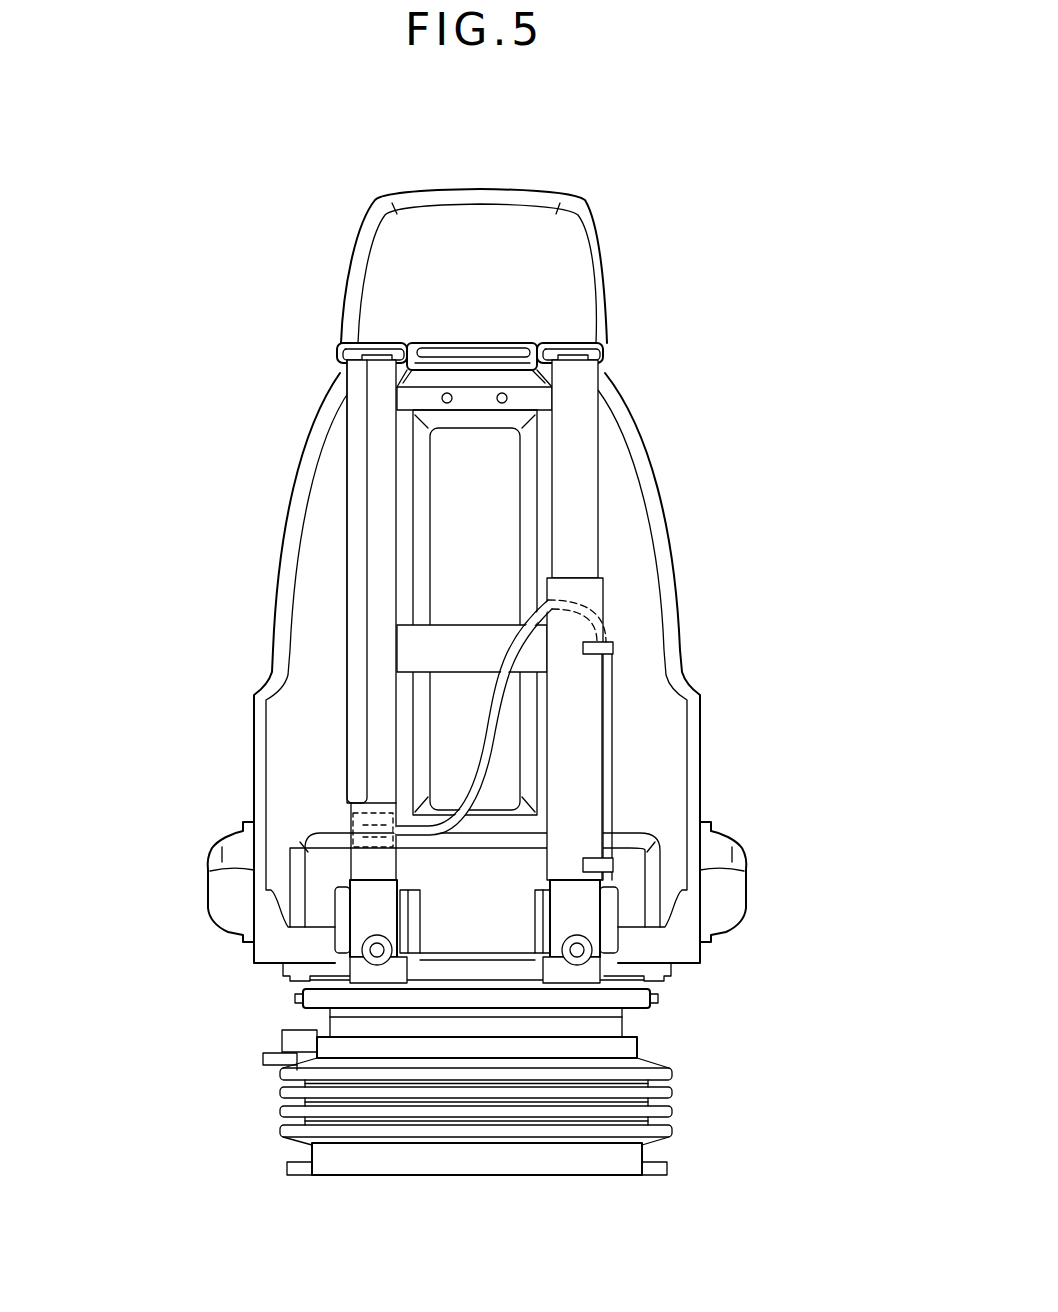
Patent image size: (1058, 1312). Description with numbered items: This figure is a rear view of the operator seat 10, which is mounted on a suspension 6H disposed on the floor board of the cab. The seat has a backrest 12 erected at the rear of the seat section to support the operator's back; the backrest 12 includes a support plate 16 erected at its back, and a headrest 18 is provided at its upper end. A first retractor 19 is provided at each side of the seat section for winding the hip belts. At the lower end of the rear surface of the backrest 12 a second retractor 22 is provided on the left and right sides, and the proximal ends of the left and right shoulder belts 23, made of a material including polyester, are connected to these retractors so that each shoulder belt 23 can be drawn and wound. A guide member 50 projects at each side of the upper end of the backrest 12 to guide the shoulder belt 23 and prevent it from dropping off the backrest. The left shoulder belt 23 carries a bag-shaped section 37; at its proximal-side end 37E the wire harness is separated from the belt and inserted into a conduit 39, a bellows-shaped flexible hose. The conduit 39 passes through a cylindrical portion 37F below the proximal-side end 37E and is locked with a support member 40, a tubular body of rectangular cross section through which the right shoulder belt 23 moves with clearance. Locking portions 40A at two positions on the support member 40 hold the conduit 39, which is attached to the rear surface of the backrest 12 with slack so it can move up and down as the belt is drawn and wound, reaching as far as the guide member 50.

The operator seat 10 is at (496, 167).
The headrest 18 is at (557, 272).
The guide member 50 is at (340, 344).
The backrest 12 is at (660, 638).
The support plate 16 is at (633, 590).
The shoulder belt 23 is at (572, 492).
The bag-shaped section 37 is at (358, 455).
The proximal-side end of the bag-shaped section 37E is at (337, 810).
The cylindrical portion 37F is at (385, 840).
The support member 40 is at (580, 782).
The locking portion 40A is at (615, 652).
The conduit 39 is at (532, 600).
The first retractor 19 is at (230, 900).
The second retractor 22 is at (357, 920).
The suspension 6H is at (668, 1112).